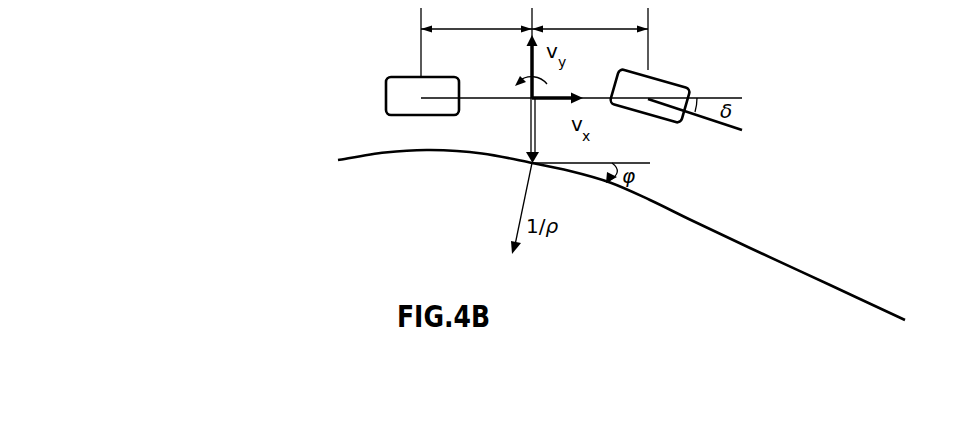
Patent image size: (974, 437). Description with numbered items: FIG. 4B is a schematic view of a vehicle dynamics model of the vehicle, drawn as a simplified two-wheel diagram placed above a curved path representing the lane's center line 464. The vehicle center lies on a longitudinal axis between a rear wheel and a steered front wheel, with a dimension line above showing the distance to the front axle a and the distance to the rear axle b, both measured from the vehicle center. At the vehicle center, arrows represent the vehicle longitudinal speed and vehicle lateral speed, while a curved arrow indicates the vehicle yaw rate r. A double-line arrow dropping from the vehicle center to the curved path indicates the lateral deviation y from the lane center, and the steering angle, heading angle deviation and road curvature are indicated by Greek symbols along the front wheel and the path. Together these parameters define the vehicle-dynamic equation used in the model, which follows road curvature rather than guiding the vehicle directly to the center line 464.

The center line 464 is at (693, 225).
The distance to front axle a is at (590, 36).
The distance to rear axle b is at (476, 40).
The vehicle yaw rate r is at (524, 83).
The lateral deviation from the lane center y is at (525, 130).